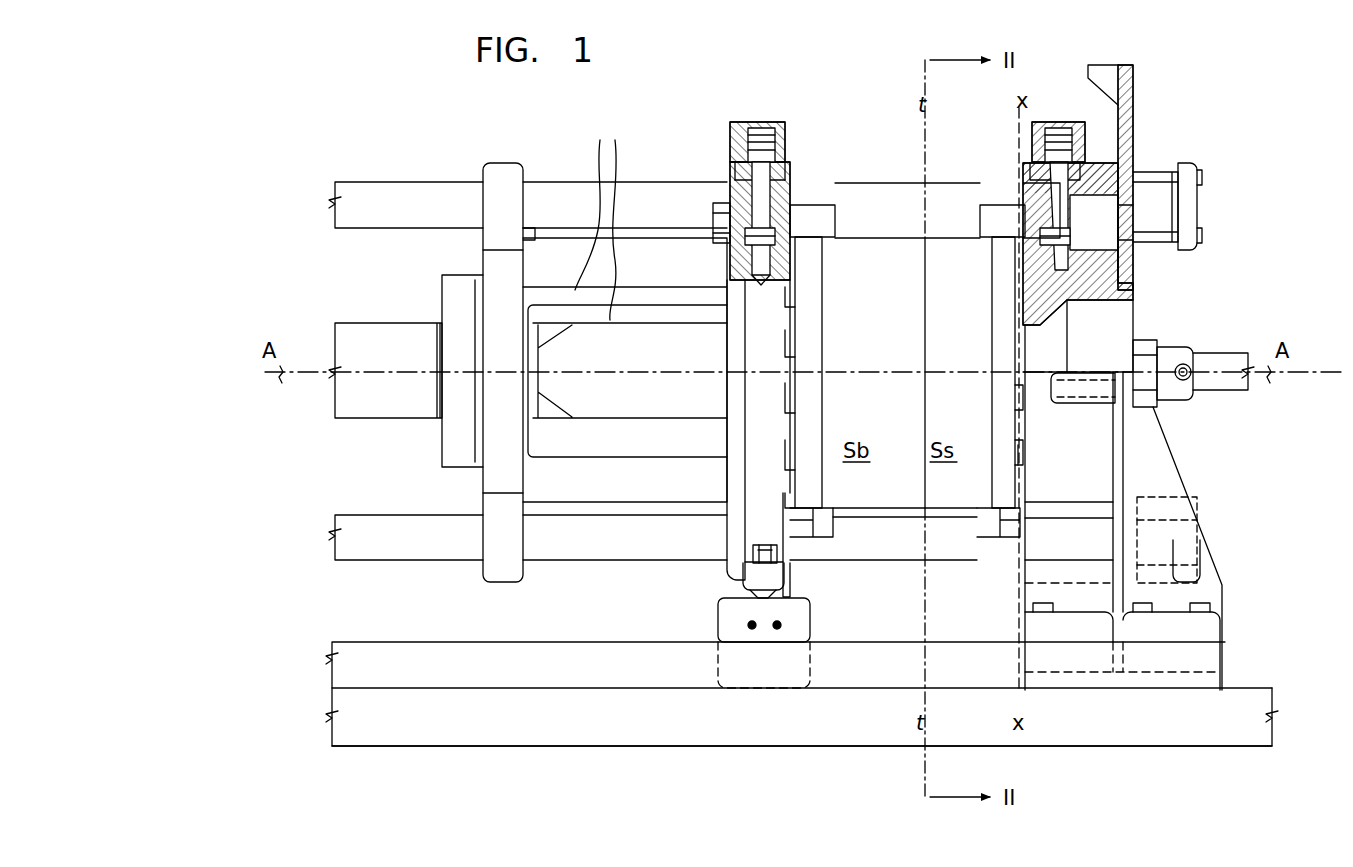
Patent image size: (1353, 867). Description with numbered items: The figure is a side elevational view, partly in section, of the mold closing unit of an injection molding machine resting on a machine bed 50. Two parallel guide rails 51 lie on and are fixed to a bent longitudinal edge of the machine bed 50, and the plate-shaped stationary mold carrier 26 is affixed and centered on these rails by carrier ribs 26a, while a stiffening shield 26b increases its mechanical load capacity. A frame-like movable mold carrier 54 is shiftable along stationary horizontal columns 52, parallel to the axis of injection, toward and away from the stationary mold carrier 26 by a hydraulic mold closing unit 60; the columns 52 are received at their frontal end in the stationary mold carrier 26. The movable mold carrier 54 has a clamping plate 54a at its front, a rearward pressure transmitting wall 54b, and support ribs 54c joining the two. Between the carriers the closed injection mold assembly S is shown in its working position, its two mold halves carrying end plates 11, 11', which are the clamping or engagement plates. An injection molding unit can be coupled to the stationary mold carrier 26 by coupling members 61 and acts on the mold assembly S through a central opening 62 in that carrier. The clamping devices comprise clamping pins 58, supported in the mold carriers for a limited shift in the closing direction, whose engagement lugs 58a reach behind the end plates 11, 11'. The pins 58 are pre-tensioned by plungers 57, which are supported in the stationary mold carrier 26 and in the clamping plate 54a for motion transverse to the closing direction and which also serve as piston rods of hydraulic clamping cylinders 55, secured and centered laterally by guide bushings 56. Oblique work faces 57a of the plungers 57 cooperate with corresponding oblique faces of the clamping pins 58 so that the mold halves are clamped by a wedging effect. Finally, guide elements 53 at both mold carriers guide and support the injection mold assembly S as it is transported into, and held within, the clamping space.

The end plate 11 is at (1031, 372).
The end plate 11' is at (836, 372).
The stationary mold carrier 26 is at (1157, 368).
The carrier ribs 26a is at (1190, 630).
The stiffening shield 26b is at (1125, 92).
The machine bed 50 is at (385, 714).
The guide rails 51 is at (355, 664).
The horizontal columns 52 is at (888, 205).
The guide elements 53 is at (803, 522).
The movable mold carrier 54 is at (627, 307).
The clamping plate 54a is at (732, 365).
The pressure transmitting wall 54b is at (497, 463).
The support ribs 54c is at (560, 285).
The hydraulic clamping cylinders 55 is at (748, 122).
The guide bushings 56 is at (735, 165).
The plungers 57 is at (738, 192).
The oblique work faces 57a is at (713, 210).
The clamping pins 58 is at (715, 240).
The engagement lugs 58a is at (798, 225).
The hydraulic mold closing unit 60 is at (392, 386).
The coupling members 61 is at (1160, 368).
The central opening 62 is at (1110, 342).
The injection mold assembly S is at (1028, 455).